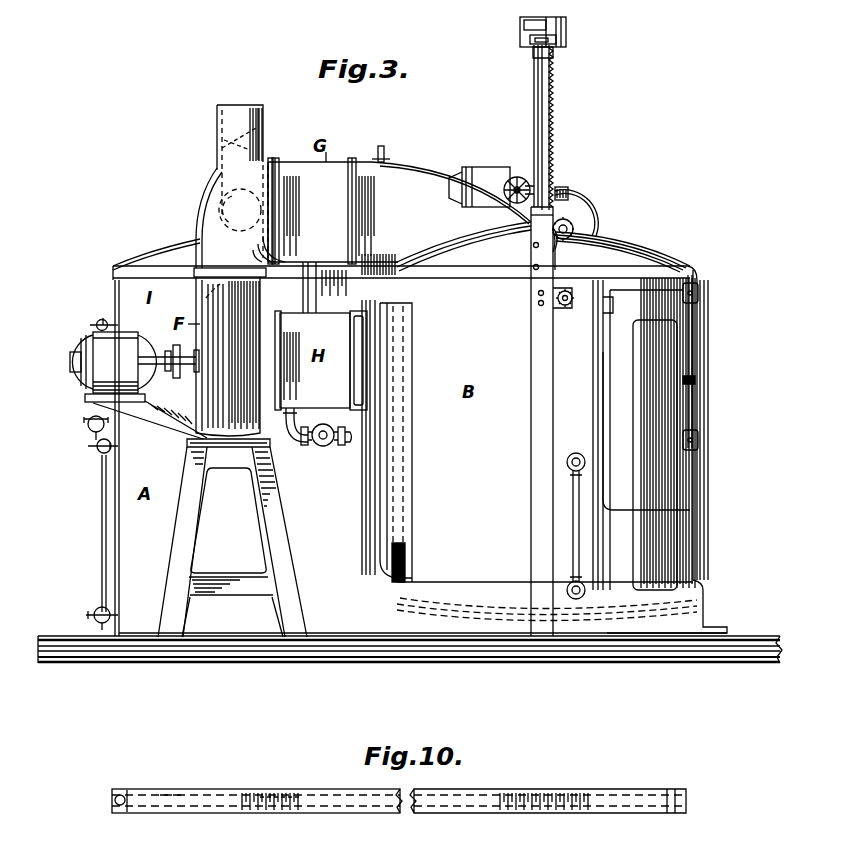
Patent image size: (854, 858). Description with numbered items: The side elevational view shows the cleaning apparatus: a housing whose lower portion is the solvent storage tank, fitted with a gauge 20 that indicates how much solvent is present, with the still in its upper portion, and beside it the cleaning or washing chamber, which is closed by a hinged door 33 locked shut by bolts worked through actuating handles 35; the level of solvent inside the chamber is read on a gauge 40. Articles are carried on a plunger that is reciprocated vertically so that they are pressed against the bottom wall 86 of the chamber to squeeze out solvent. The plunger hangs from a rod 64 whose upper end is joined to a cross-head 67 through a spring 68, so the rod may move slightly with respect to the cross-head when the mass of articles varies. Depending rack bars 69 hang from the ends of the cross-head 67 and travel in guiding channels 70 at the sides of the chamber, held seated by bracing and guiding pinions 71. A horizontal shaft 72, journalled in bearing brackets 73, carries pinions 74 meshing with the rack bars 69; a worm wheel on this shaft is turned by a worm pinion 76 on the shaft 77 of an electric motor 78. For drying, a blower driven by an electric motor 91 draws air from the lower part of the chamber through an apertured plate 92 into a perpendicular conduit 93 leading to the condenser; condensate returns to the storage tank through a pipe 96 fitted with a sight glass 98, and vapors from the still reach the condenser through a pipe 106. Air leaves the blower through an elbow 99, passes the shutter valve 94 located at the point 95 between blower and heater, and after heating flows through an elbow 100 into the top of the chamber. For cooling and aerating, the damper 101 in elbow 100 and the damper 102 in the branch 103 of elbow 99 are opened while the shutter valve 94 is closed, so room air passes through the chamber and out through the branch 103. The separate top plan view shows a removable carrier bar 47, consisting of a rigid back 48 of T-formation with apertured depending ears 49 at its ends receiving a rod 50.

In FIG. 3, the branch 103 is at (238, 106).
In FIG. 3, the damper 102 is at (218, 134).
In FIG. 3, the elbow 99 is at (205, 224).
In FIG. 3, the valve 94 is at (266, 239).
In FIG. 3, the point 95 is at (278, 159).
In FIG. 3, the damper 101 is at (386, 159).
In FIG. 3, the elbow 100 is at (418, 170).
In FIG. 3, the pipe 106 is at (312, 262).
In FIG. 3, the electric motor 78 is at (485, 165).
In FIG. 3, the shaft 77 is at (535, 180).
In FIG. 3, the rod 64 is at (553, 118).
In FIG. 3, the rack bars 69 is at (550, 139).
In FIG. 3, the worm pinion 76 is at (565, 186).
In FIG. 3, the horizontal shaft 72 is at (570, 223).
In FIG. 3, the pinions 74 is at (575, 226).
In FIG. 3, the bearing brackets 73 is at (557, 240).
In FIG. 3, the spring 68 is at (522, 40).
In FIG. 3, the cross-head 67 is at (568, 40).
In FIG. 3, the guiding channels 70 is at (534, 459).
In FIG. 3, the bracing and guiding pinions 71 is at (562, 310).
In FIG. 3, the actuating handles 35 is at (699, 296).
In FIG. 3, the hinged door 33 is at (697, 382).
In FIG. 3, the gauge 40 is at (580, 548).
In FIG. 3, the electric motor 91 is at (138, 378).
In FIG. 3, the gauge 20 is at (102, 523).
In FIG. 3, the pipe 96 is at (291, 445).
In FIG. 3, the sight glass 98 is at (332, 446).
In FIG. 3, the conduit 93 is at (390, 499).
In FIG. 3, the apertured plate 92 is at (406, 546).
In FIG. 3, the bottom wall 86 is at (470, 619).
In FIG. 10, the ears 49 is at (124, 792).
In FIG. 10, the rod 50 is at (170, 813).
In FIG. 10, the back 48 is at (290, 813).
In FIG. 10, the carrier bars 47 is at (620, 785).